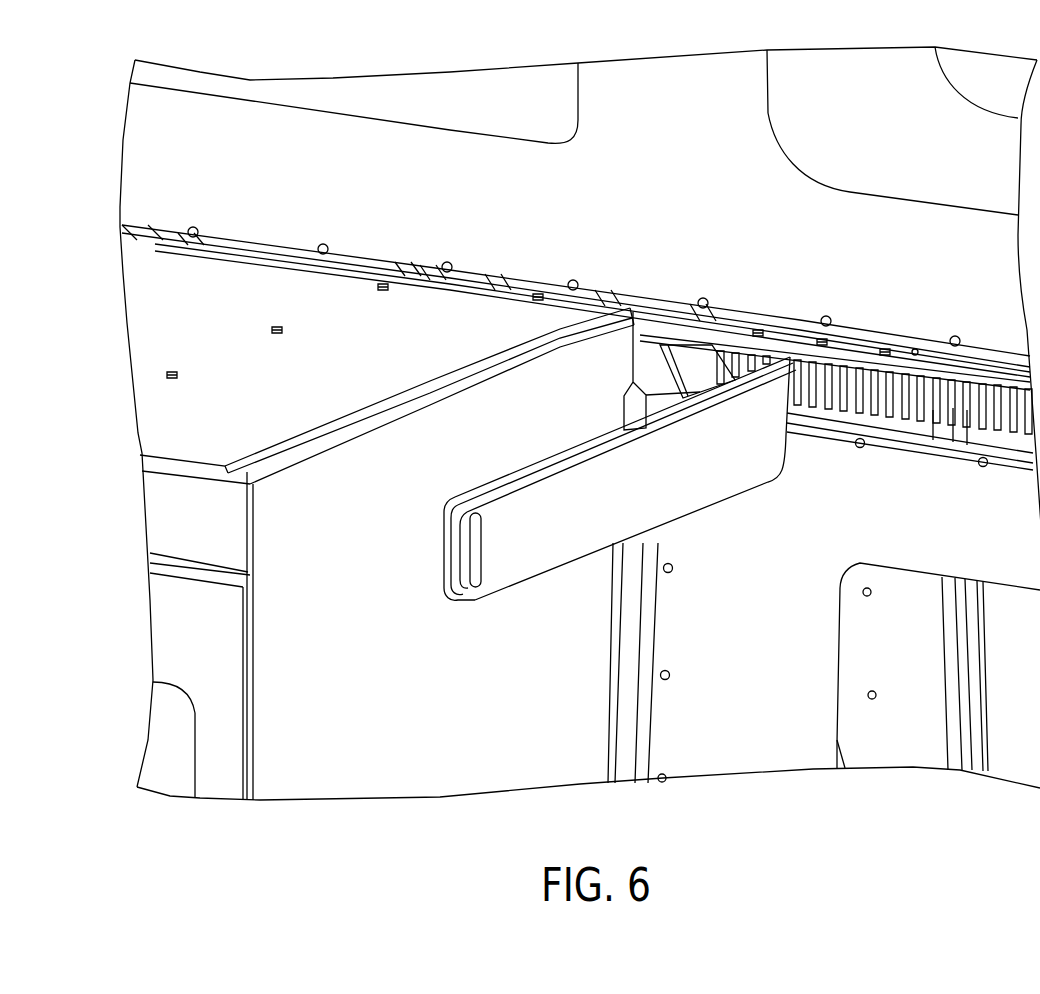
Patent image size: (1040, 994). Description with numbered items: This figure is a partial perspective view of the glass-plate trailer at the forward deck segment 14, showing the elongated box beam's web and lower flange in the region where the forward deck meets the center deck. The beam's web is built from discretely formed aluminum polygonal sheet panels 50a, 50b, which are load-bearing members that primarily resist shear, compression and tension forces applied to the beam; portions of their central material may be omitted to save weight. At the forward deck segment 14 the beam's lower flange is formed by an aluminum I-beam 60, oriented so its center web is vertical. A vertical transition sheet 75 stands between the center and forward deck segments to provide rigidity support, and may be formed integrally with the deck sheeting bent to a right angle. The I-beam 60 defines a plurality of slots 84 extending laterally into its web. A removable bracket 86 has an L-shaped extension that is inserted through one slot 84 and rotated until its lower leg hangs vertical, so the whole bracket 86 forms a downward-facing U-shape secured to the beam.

The forward deck segment 14 is at (330, 303).
The polygonal sheet panel 50a is at (697, 139).
The polygonal sheet panel 50b is at (766, 683).
The I-beam 60 is at (643, 377).
The vertical transition sheet 75 is at (438, 708).
The slot 84 is at (873, 390).
The removable bracket 86 is at (732, 480).